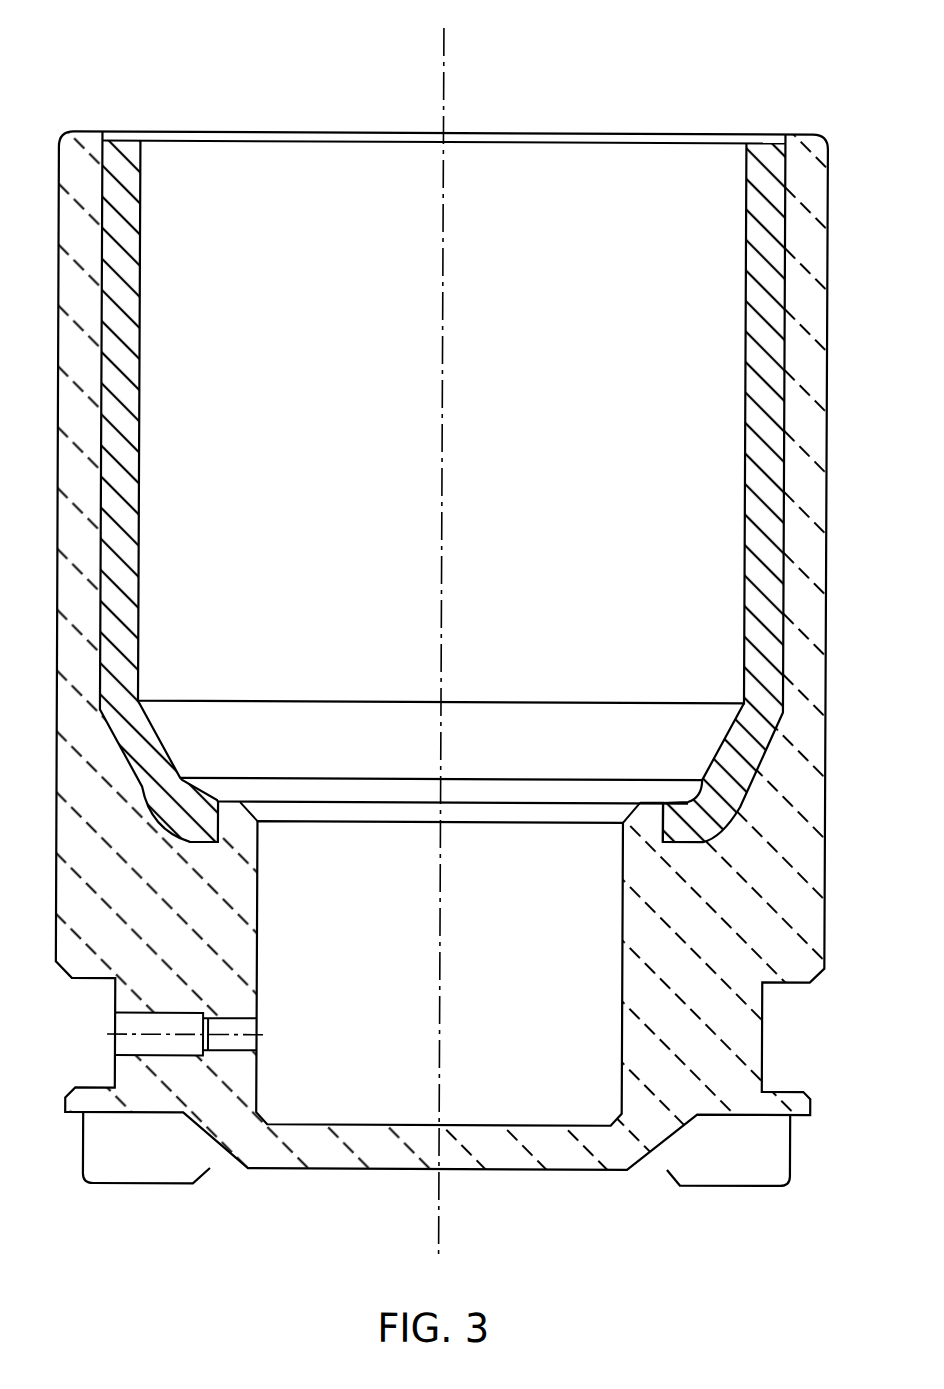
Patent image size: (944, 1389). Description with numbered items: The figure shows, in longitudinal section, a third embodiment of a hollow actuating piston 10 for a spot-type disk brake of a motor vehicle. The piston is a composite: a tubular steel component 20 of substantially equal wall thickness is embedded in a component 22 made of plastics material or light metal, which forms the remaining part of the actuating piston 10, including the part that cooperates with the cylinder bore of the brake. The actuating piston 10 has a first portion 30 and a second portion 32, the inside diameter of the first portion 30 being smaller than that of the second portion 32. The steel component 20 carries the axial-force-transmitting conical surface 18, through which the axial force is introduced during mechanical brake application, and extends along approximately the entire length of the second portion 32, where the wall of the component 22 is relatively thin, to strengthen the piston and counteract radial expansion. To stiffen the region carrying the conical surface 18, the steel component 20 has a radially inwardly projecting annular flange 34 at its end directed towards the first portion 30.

The actuating piston 10 is at (441, 632).
The conical surface 18 is at (651, 758).
The steel component 20 is at (126, 244).
The component made of plastics material or light metal 22 is at (199, 916).
The first portion 30 is at (534, 1033).
The second portion 32 is at (539, 422).
The annular flange 34 is at (668, 824).